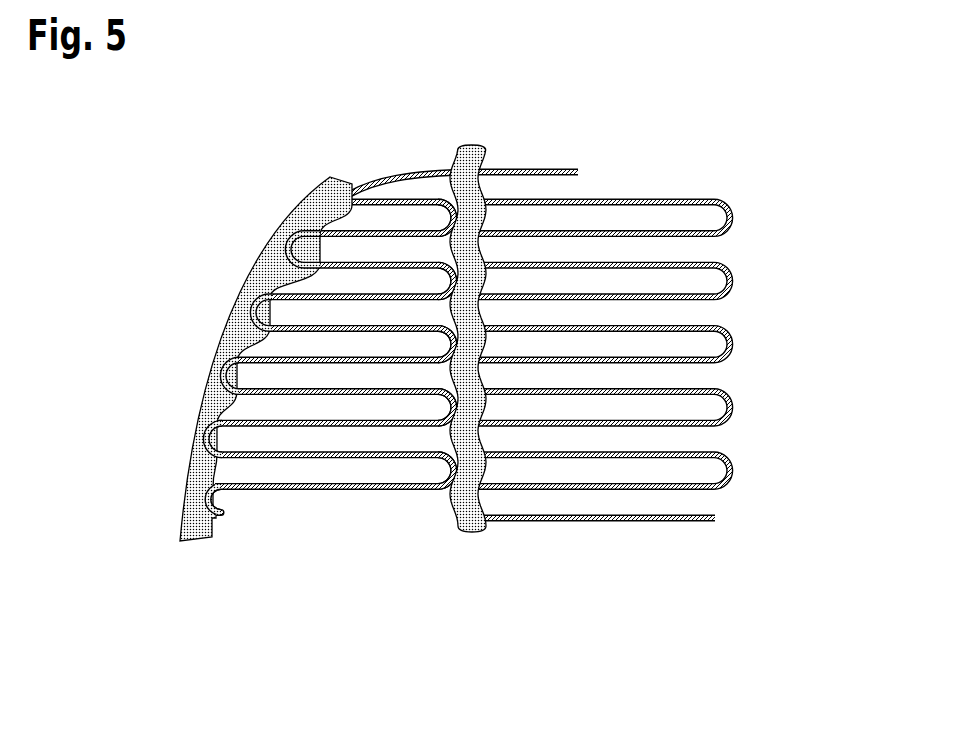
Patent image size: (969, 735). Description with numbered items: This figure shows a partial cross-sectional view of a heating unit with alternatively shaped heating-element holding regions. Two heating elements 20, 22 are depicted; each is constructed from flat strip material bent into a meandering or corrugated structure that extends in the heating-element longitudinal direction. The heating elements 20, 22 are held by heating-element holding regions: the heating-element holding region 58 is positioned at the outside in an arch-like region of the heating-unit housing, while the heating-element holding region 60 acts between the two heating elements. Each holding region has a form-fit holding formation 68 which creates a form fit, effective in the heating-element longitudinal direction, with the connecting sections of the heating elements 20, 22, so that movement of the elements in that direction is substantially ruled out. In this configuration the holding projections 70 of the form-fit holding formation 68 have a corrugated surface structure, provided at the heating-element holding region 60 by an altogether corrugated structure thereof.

The heating element 20 is at (343, 490).
The heating element 22 is at (626, 524).
The heating-element holding region 58 is at (194, 525).
The heating-element holding region 60 is at (472, 345).
The form-fit holding formation 68 is at (493, 223).
The holding projection 70 is at (450, 313).